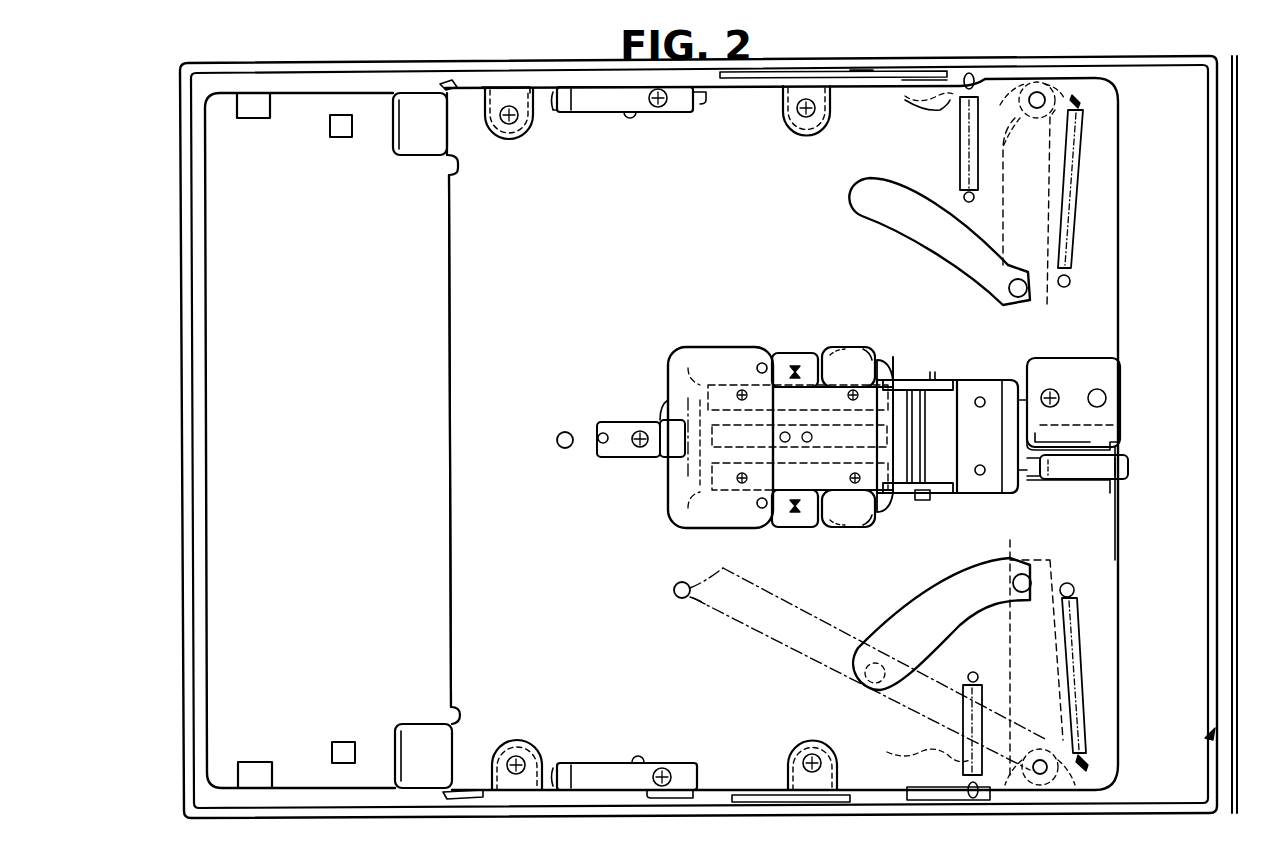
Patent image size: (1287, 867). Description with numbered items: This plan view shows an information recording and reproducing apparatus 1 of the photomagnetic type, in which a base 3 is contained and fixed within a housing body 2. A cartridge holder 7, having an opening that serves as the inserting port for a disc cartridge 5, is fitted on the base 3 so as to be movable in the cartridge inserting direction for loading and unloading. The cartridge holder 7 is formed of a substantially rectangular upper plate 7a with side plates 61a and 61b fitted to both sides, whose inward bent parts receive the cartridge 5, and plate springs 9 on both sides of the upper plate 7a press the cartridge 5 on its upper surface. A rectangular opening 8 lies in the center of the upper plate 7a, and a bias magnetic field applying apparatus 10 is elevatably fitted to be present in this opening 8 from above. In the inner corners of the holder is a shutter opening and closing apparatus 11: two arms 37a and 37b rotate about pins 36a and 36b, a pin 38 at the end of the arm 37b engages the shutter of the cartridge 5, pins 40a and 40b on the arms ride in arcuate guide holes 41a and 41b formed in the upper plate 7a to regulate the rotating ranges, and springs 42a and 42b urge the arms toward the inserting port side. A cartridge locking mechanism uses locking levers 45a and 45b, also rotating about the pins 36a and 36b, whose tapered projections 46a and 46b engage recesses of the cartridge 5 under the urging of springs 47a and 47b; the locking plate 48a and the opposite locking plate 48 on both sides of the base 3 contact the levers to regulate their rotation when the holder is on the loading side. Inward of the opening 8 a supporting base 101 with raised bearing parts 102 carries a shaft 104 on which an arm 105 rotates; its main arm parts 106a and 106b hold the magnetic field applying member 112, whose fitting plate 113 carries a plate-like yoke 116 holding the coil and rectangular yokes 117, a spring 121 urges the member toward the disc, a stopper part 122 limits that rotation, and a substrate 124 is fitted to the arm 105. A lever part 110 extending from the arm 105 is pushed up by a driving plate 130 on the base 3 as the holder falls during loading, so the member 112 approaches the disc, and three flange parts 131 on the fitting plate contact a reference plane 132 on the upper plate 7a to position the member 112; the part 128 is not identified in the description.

The information recording and reproducing apparatus 1 is at (1010, 58).
The housing body 2 is at (205, 58).
The base 3 is at (1110, 493).
The disc cartridge 5 is at (375, 104).
The cartridge holder 7 is at (447, 450).
The upper plate 7a is at (458, 518).
The opening 8 is at (790, 354).
The plate springs 9 is at (606, 100).
The bias magnetic field applying apparatus 10 is at (668, 512).
The shutter opening and closing apparatus 11 is at (852, 693).
The pin 36a is at (1055, 100).
The pin 36b is at (1040, 776).
The arm 37a is at (1003, 263).
The arm 37b is at (1052, 562).
The pin 38 is at (675, 593).
The pin 40a is at (1030, 288).
The pin 40b is at (1032, 583).
The arcuate guide hole 41a is at (848, 212).
The arcuate guide hole 41b is at (875, 628).
The spring 42a is at (1085, 178).
The spring 42b is at (1090, 662).
The locking lever 45a is at (964, 88).
The locking lever 45b is at (978, 800).
The projection 46a is at (915, 110).
The projection 46b is at (925, 742).
The spring 47a is at (960, 170).
The spring 47b is at (988, 690).
The slide plate 48 is at (910, 802).
The locking plate 48a is at (900, 70).
The side plate 61a is at (455, 86).
The side plate 61b is at (480, 800).
The supporting base 101 is at (922, 495).
The bearing parts 102 is at (970, 392).
The shaft 104 is at (990, 495).
The arm 105 is at (934, 376).
The main arm part 106a is at (892, 512).
The main arm part 106b is at (918, 375).
The lever part 110 is at (1130, 466).
The magnetic field applying member 112 is at (730, 353).
The fitting plate 113 is at (685, 355).
The yoke 116 is at (670, 460).
The yokes 117 is at (700, 355).
The spring 121 is at (776, 350).
The stopper part 122 is at (930, 495).
The substrate 124 is at (1038, 372).
The arm portion 128 is at (668, 418).
The driving plate 130 is at (1115, 448).
The flange parts 131 is at (826, 348).
The reference plane 132 is at (878, 350).